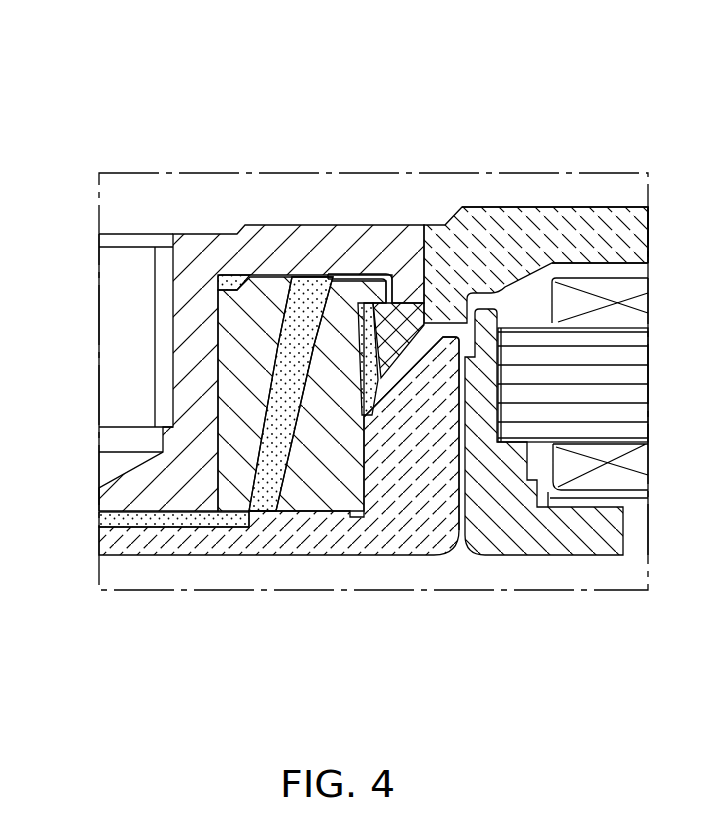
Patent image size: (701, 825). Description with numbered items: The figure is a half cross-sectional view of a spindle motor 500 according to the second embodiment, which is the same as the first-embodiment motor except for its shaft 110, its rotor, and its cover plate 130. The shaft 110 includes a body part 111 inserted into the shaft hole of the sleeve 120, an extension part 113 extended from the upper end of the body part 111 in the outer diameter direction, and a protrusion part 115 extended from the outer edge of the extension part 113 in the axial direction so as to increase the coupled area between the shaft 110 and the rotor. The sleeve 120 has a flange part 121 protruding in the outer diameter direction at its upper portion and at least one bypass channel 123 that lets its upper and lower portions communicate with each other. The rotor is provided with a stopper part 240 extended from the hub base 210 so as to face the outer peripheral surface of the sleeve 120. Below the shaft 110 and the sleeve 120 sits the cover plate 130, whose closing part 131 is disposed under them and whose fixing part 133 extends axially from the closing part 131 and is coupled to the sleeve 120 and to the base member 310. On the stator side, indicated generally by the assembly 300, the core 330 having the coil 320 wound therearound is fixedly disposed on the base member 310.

The spindle motor 500 is at (390, 42).
The shaft 110 is at (373, 278).
The body part 111 is at (197, 333).
The extension part 113 is at (308, 250).
The protrusion part 115 is at (412, 291).
The sleeve 120 is at (203, 461).
The flange part 121 is at (335, 289).
The bypass channel 123 is at (263, 417).
The cover plate 130 is at (279, 522).
The closing part 131 is at (332, 532).
The fixing part 133 is at (414, 435).
The hub base 210 is at (556, 233).
The stopper part 240 is at (395, 338).
The motor assembly 300 is at (555, 493).
The base member 310 is at (507, 533).
The coil 320 is at (583, 473).
The core 330 is at (623, 412).